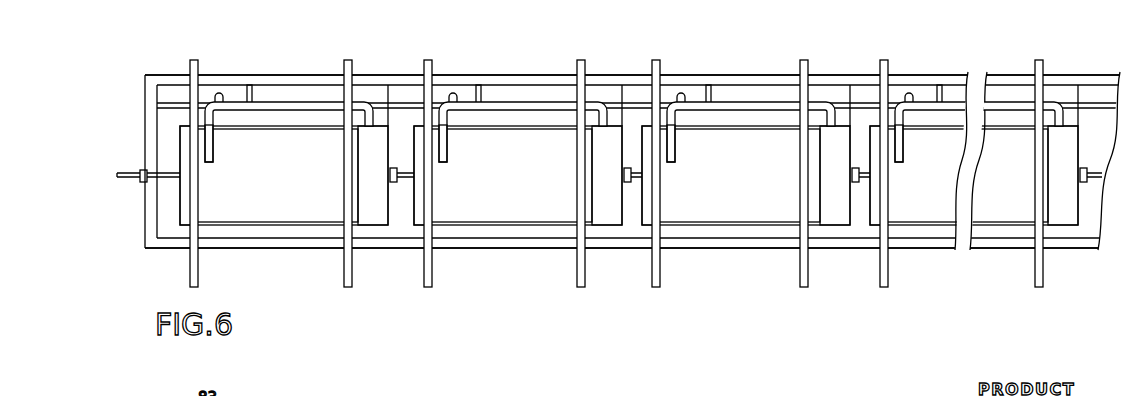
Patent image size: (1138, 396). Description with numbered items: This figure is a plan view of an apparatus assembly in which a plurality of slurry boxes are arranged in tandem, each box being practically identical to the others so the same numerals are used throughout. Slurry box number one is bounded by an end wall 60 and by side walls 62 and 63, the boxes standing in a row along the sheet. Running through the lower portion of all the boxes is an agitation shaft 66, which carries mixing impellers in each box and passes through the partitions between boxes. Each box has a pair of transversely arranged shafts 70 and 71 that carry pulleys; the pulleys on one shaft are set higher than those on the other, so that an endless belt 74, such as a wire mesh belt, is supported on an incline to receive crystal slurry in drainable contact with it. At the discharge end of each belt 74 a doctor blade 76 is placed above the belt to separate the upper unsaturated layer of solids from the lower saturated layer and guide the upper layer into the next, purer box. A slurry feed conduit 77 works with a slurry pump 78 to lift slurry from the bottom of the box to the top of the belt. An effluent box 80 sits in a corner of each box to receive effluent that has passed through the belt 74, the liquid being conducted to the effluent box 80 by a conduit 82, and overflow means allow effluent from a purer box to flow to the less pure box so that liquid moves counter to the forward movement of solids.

The end wall 60 is at (153, 215).
The side wall 62 is at (277, 78).
The side wall 63 is at (278, 248).
The agitation shaft 66 is at (124, 169).
The transversely arranged shaft 70 is at (190, 69).
The transversely arranged shaft 71 is at (352, 69).
The endless belt 74 is at (266, 224).
The doctor blade 76 is at (358, 176).
The slurry feed conduit 77 is at (214, 157).
The slurry pump 78 is at (746, 191).
The effluent box 80 is at (252, 95).
The conduit 82 is at (221, 122).